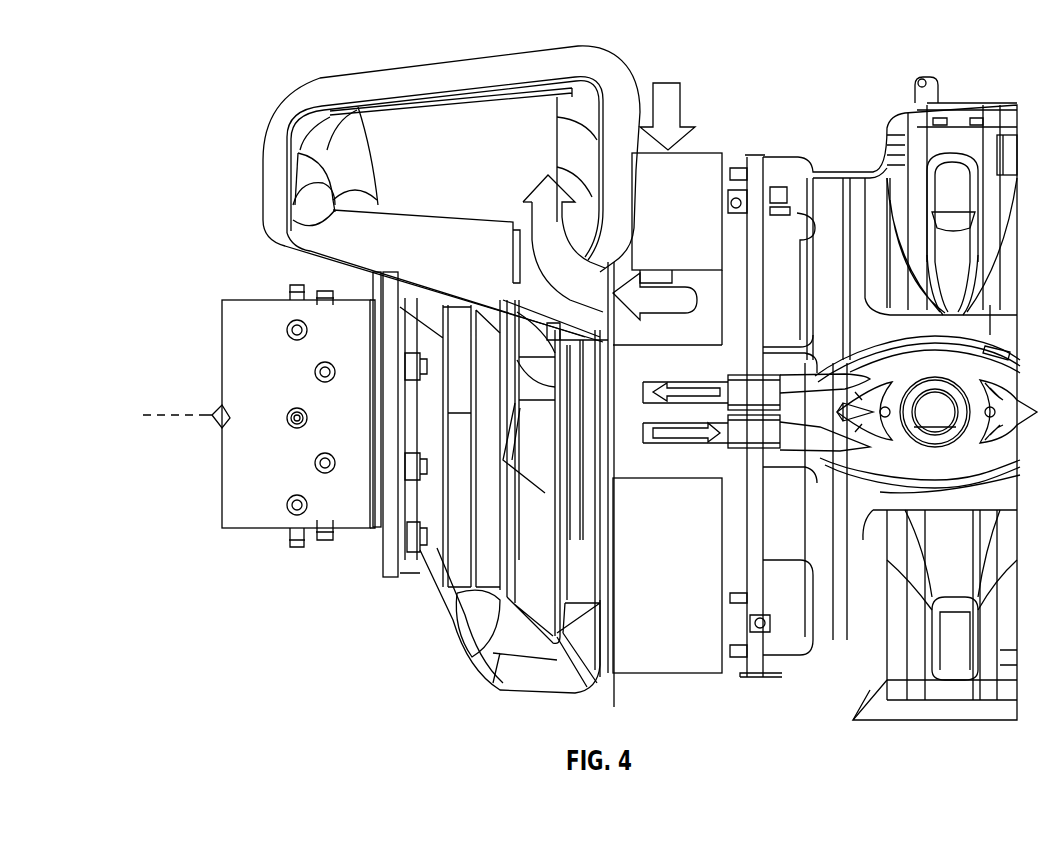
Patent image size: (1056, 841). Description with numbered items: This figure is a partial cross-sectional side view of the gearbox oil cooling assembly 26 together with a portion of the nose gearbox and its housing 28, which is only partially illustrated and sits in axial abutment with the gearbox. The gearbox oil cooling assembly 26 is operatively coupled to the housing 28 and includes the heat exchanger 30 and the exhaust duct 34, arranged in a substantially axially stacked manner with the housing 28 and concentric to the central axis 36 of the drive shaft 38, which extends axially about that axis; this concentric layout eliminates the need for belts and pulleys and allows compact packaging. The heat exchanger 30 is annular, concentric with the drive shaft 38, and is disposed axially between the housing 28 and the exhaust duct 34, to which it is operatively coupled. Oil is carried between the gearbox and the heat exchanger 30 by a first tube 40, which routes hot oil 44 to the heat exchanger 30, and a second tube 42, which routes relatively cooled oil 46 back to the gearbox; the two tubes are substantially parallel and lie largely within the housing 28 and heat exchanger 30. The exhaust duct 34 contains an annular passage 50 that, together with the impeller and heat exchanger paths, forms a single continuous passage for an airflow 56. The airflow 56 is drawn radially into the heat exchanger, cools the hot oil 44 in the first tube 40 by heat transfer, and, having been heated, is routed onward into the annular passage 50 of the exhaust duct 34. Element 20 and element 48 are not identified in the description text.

The engine 20 is at (857, 162).
The gearbox oil cooling assembly 26 is at (322, 70).
The housing 28 is at (752, 160).
The heat exchanger 30 is at (698, 153).
The exhaust duct 34 is at (430, 72).
The central axis 36 is at (178, 413).
The drive shaft 38 is at (270, 300).
The first tube 40 is at (680, 382).
The second tube 42 is at (667, 443).
The hot oil 44 is at (668, 383).
The cooled oil 46 is at (700, 443).
The support plate 48 is at (393, 583).
The annular passage 50 is at (503, 126).
The airflow 56 is at (668, 78).